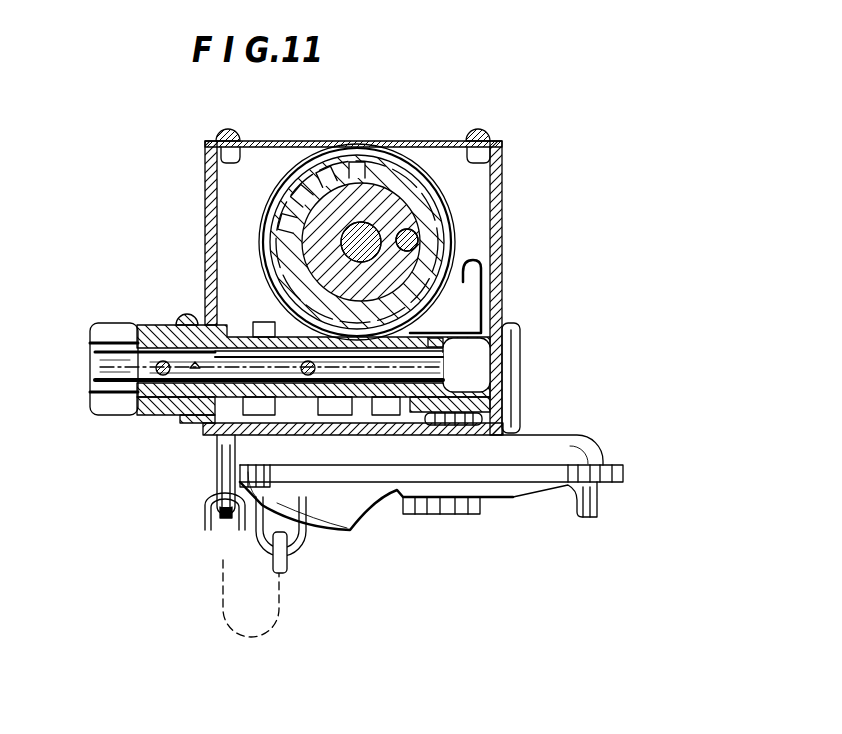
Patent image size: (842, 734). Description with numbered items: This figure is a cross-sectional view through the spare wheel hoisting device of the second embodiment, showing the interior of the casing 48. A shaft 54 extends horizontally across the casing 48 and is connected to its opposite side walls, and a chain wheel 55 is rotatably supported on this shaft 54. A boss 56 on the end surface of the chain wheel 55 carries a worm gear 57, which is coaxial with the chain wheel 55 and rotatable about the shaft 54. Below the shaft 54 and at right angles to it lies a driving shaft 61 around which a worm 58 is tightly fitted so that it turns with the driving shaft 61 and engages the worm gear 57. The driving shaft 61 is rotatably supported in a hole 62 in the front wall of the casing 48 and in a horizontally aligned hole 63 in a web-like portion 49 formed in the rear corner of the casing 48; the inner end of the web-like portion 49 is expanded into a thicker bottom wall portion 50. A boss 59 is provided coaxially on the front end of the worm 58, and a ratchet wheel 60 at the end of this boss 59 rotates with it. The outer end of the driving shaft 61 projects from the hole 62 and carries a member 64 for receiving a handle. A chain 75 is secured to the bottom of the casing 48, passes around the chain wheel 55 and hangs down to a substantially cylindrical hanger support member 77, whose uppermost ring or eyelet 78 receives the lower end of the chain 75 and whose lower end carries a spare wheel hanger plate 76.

The casing 48 is at (205, 157).
The web-like portion 49 is at (428, 341).
The thicker bottom wall portion 50 is at (475, 380).
The shaft 54 is at (360, 230).
The chain wheel 55 is at (327, 158).
The boss 56 is at (373, 193).
The worm gear 57 is at (414, 187).
The worm 58 is at (373, 400).
The boss 59 is at (307, 400).
The ratchet wheel 60 is at (283, 400).
The driving shaft 61 is at (210, 437).
The hole 62 is at (181, 383).
The hole 63 is at (443, 367).
The member for receiving a handle 64 is at (92, 415).
The chain 75 is at (205, 530).
The spare wheel hanger plate 76 is at (514, 498).
The hanger support member 77 is at (482, 322).
The ring or eyelet 78 is at (466, 293).